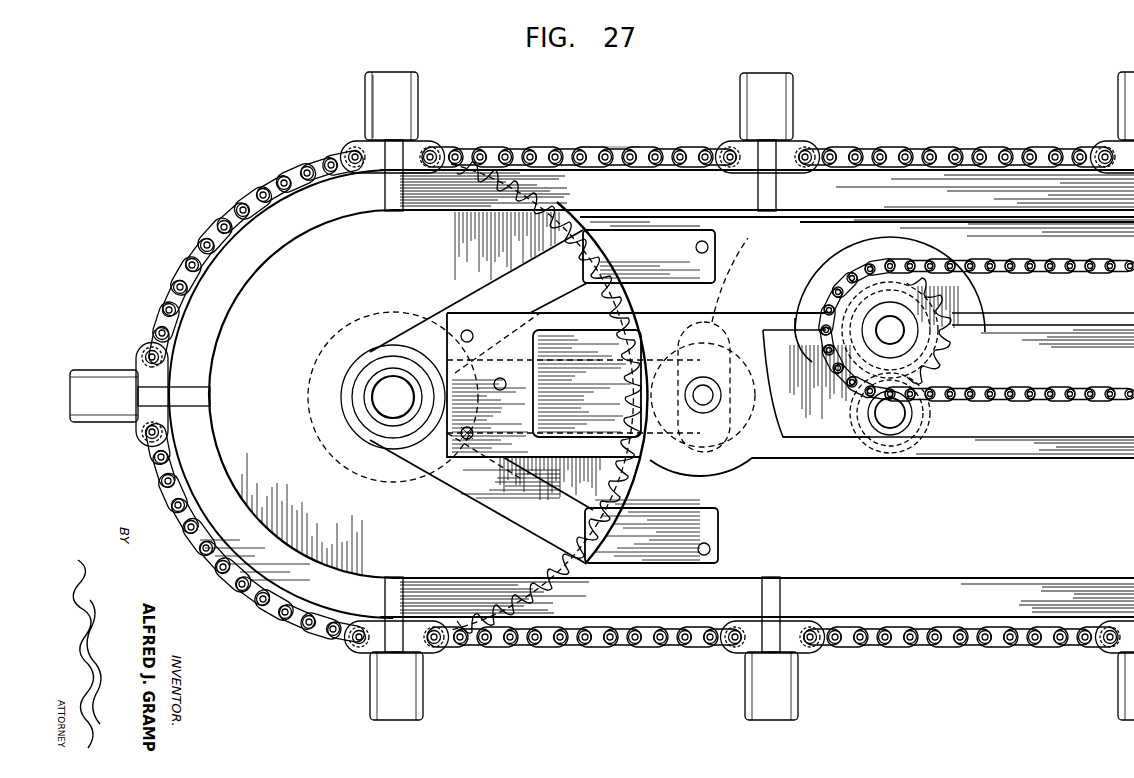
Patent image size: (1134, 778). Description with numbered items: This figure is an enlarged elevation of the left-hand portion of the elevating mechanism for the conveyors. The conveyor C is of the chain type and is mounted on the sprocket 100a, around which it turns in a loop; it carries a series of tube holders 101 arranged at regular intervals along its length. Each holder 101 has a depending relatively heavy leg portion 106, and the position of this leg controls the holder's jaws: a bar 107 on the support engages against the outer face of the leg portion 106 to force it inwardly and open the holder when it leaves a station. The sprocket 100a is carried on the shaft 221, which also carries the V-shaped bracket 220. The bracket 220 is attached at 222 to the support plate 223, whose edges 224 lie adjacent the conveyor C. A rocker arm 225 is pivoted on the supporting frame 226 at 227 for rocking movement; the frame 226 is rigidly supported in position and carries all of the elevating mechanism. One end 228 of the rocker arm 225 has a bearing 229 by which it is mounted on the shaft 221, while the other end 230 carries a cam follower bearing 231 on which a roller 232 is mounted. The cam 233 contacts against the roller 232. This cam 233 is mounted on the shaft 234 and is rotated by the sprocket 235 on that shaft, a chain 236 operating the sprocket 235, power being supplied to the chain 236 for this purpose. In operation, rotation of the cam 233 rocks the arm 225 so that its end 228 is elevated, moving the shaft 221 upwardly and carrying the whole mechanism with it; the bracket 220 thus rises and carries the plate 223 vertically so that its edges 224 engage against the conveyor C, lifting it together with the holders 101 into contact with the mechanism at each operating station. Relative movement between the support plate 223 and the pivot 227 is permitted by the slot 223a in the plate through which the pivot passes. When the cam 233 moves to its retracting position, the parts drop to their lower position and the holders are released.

The sprocket 100a is at (497, 553).
The tube holder 101 is at (795, 112).
The leg portion 106 is at (262, 352).
The bar 107 is at (1100, 580).
The V-shaped bracket 220 is at (470, 495).
The shaft 221 is at (385, 383).
The attachment point 222 is at (670, 232).
The support plate 223 is at (748, 466).
The slot 223a is at (726, 300).
The plate edges 224 is at (880, 150).
The rocker arm 225 is at (588, 352).
The supporting frame 226 is at (810, 302).
The pivot shaft 227 is at (703, 390).
The rocker arm end 228 is at (607, 387).
The bearing 229 is at (345, 425).
The rocker arm end 230 is at (838, 440).
The cam follower bearing 231 is at (895, 422).
The roller 232 is at (912, 416).
The cam 233 is at (858, 262).
The shaft 234 is at (895, 330).
The sprocket 235 is at (960, 372).
The chain 236 is at (990, 262).
The conveyor C is at (605, 140).